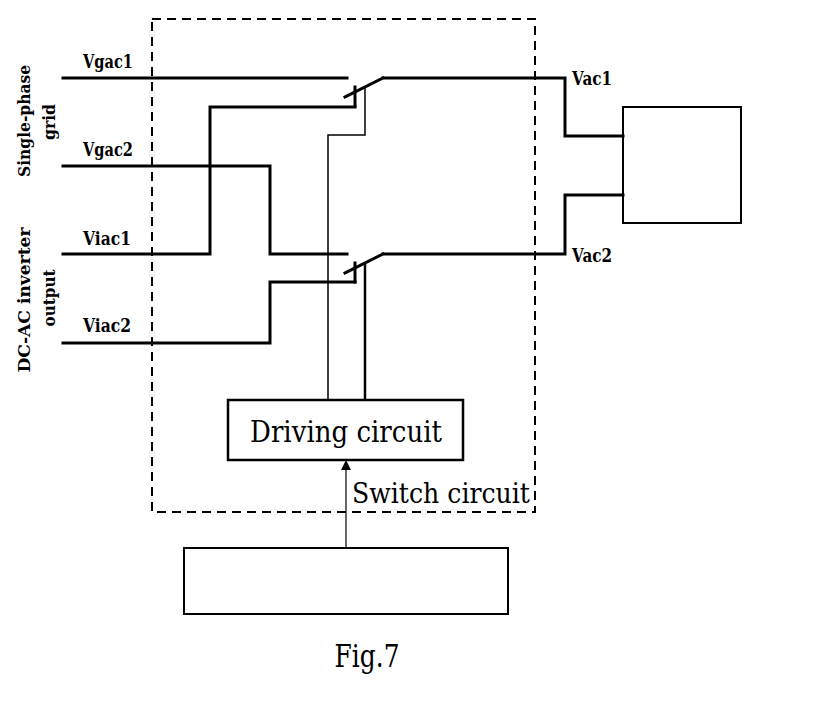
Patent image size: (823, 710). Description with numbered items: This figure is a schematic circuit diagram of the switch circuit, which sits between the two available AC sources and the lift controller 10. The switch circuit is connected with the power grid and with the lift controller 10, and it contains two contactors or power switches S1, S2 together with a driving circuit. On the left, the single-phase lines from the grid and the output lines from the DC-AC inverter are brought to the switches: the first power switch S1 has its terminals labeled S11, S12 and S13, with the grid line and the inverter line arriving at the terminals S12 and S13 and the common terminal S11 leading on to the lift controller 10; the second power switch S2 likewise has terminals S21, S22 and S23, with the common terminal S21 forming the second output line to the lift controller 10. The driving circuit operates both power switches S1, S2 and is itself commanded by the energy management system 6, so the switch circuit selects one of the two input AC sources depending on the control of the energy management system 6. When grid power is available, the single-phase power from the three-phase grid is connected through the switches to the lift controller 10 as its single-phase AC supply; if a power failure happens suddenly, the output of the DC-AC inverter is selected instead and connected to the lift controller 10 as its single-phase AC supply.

The lift controller 10 is at (667, 108).
The energy management system 6 is at (508, 579).
The power switch S1 is at (364, 63).
The first switch common terminal S11 is at (503, 93).
The first switch grid terminal S12 is at (205, 64).
The first switch inverter terminal S13 is at (209, 167).
The power switch S2 is at (364, 239).
The second switch common terminal S21 is at (503, 224).
The second switch grid terminal S22 is at (205, 210).
The second switch inverter terminal S23 is at (209, 299).